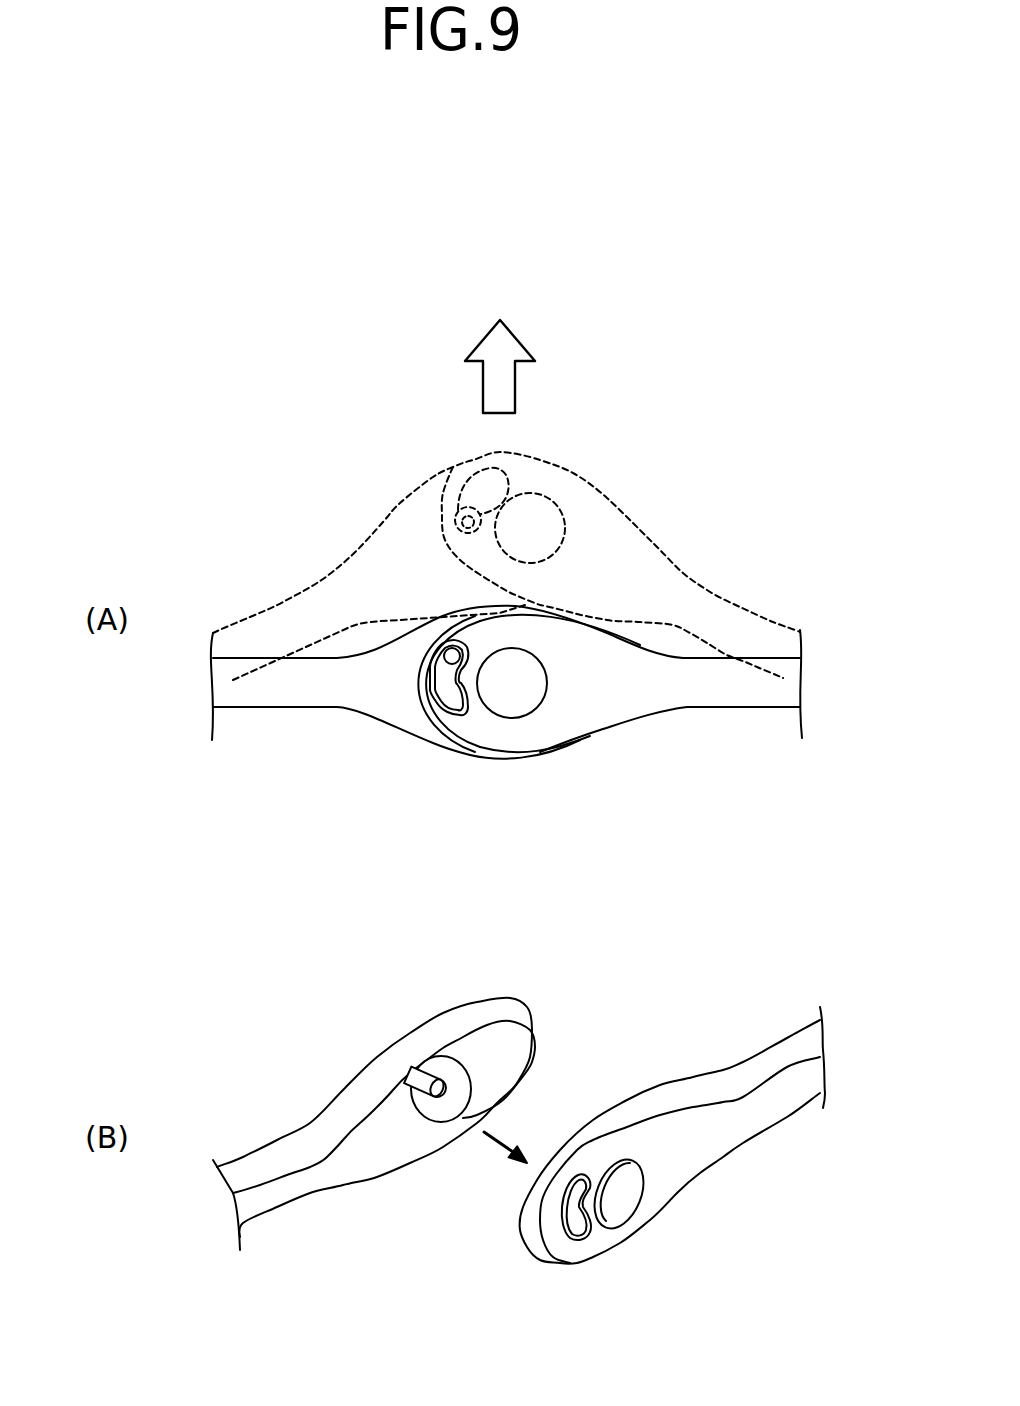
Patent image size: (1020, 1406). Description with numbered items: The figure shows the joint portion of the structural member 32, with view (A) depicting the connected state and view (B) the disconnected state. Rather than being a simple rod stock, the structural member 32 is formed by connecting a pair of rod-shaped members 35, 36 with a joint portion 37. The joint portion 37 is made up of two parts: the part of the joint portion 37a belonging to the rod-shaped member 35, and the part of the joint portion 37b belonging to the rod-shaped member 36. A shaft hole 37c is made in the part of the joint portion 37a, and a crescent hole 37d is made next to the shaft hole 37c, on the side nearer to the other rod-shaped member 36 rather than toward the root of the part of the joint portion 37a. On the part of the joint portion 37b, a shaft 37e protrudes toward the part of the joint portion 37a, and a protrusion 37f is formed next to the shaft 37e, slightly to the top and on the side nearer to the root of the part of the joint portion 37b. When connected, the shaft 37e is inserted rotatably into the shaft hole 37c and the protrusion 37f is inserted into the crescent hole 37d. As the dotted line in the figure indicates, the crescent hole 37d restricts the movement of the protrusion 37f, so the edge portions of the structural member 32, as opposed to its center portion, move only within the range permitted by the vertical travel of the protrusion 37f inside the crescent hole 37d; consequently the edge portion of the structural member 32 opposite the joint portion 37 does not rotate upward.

The structural member 32 is at (703, 528).
The rod-shaped member 35 is at (737, 690).
The rod-shaped member 36 is at (260, 688).
The joint portion 37 is at (556, 777).
The part of the joint portion 37a is at (620, 690).
The part of the joint portion 37b is at (367, 693).
The shaft hole 37c is at (610, 1200).
The crescent hole 37d is at (453, 707).
The shaft 37e is at (513, 1097).
The protrusion 37f is at (447, 653).